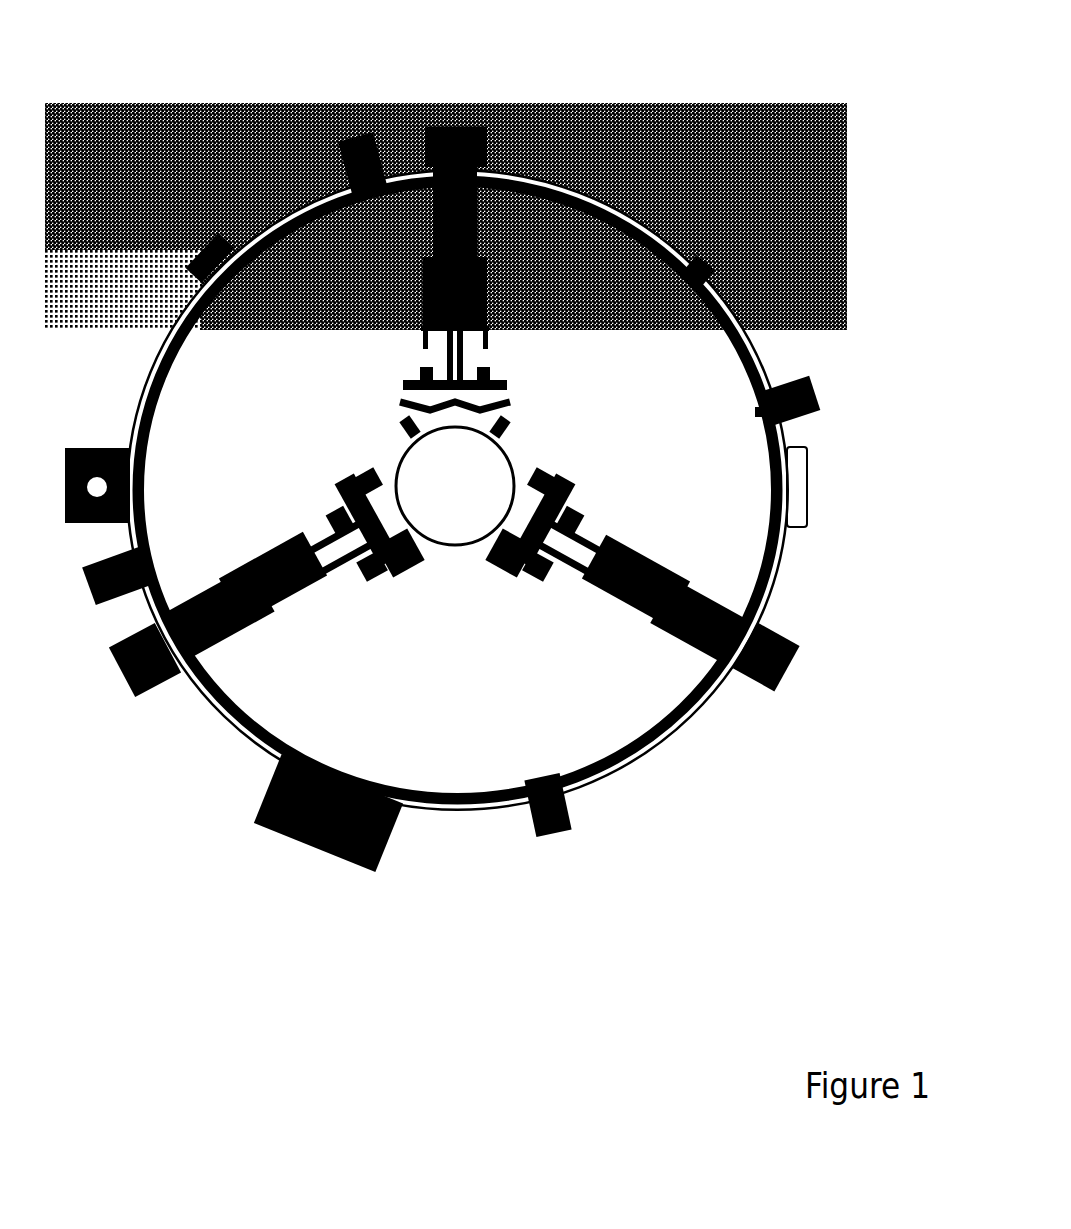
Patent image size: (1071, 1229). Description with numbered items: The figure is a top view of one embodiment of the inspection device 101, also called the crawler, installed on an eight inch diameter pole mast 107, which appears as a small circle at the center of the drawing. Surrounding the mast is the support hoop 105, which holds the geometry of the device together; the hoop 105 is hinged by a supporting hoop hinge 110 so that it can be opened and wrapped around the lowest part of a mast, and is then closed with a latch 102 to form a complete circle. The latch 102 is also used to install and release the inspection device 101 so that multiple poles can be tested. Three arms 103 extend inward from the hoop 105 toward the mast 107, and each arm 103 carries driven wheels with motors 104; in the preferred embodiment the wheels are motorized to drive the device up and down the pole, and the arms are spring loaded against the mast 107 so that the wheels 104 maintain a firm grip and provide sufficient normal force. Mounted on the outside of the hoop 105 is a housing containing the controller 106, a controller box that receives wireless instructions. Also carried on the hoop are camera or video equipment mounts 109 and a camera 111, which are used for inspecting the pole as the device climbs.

The inspection device assembly 101 is at (565, 140).
The latch on the hoop 102 is at (200, 247).
The arm that holds driven wheels 103 is at (513, 373).
The motor and wheels 104 is at (573, 470).
The support hoop 105 is at (625, 775).
The housing containing controller 106 is at (255, 812).
The high pole mast 107 is at (520, 455).
The camera or video equipment mounts 109 is at (814, 445).
The supporting hoop hinge 110 is at (707, 267).
The camera 111 is at (326, 140).